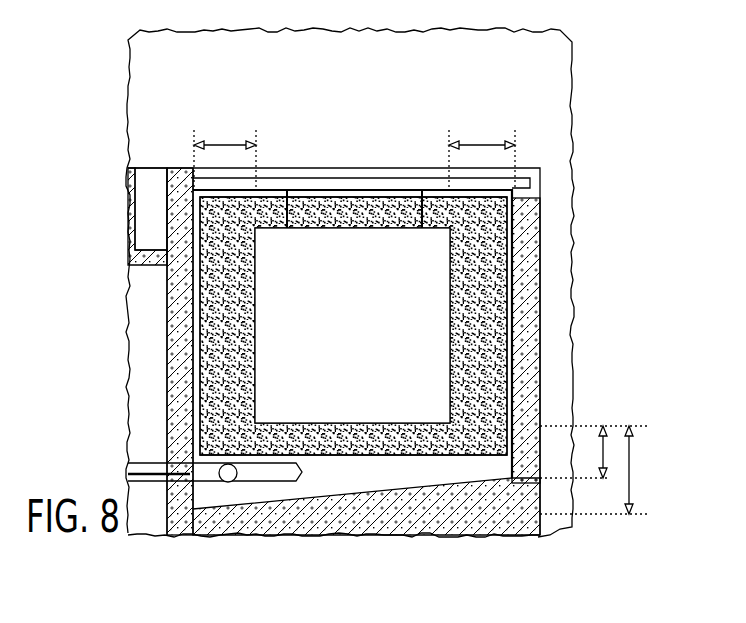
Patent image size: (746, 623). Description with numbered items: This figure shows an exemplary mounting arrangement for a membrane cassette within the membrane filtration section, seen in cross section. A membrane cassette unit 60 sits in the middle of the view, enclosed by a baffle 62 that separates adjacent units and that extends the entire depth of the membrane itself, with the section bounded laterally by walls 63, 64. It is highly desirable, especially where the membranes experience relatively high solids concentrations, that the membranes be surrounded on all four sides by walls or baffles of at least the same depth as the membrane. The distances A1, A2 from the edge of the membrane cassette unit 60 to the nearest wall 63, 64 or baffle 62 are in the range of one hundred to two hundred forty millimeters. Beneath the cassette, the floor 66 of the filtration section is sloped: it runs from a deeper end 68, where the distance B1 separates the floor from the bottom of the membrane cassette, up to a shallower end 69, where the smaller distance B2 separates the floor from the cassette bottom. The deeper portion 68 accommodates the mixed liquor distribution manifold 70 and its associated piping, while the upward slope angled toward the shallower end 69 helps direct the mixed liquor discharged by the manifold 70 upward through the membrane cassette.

The membrane cassette unit 60 is at (370, 290).
The baffle 62 is at (497, 323).
The wall 63 is at (533, 243).
The wall 64 is at (168, 333).
The floor 66 is at (363, 488).
The deeper end 68 is at (203, 512).
The shallower end 69 is at (507, 492).
The mixed liquor distribution manifold 70 is at (231, 481).
The distance A1 is at (221, 145).
The distance A2 is at (474, 145).
The distance B1 is at (632, 462).
The distance B2 is at (606, 448).